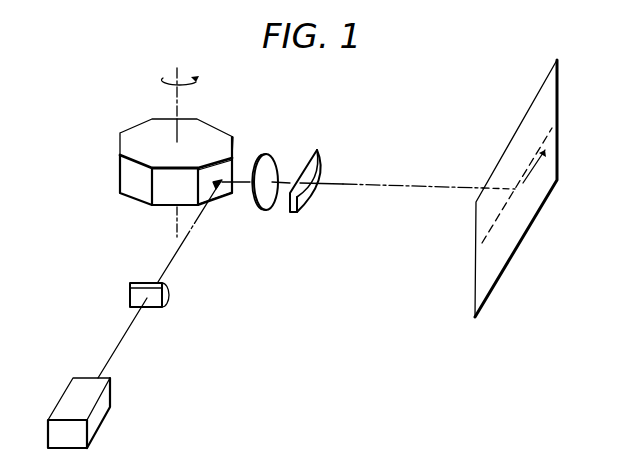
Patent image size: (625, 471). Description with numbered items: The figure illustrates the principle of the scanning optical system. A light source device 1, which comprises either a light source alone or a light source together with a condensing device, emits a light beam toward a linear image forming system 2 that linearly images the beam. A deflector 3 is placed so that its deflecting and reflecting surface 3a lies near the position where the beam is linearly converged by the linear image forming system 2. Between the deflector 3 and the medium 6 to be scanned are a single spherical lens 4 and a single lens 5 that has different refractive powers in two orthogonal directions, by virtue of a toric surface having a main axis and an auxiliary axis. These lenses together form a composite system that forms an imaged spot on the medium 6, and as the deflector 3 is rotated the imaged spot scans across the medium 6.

The light source device 1 is at (110, 395).
The linear image forming system 2 is at (173, 293).
The deflector 3 is at (206, 128).
The deflecting and reflecting surface 3a is at (218, 192).
The single spherical lens 4 is at (270, 155).
The single lens having different refractive powers in two orthogonal directions 5 is at (320, 153).
The medium to be scanned 6 is at (537, 105).